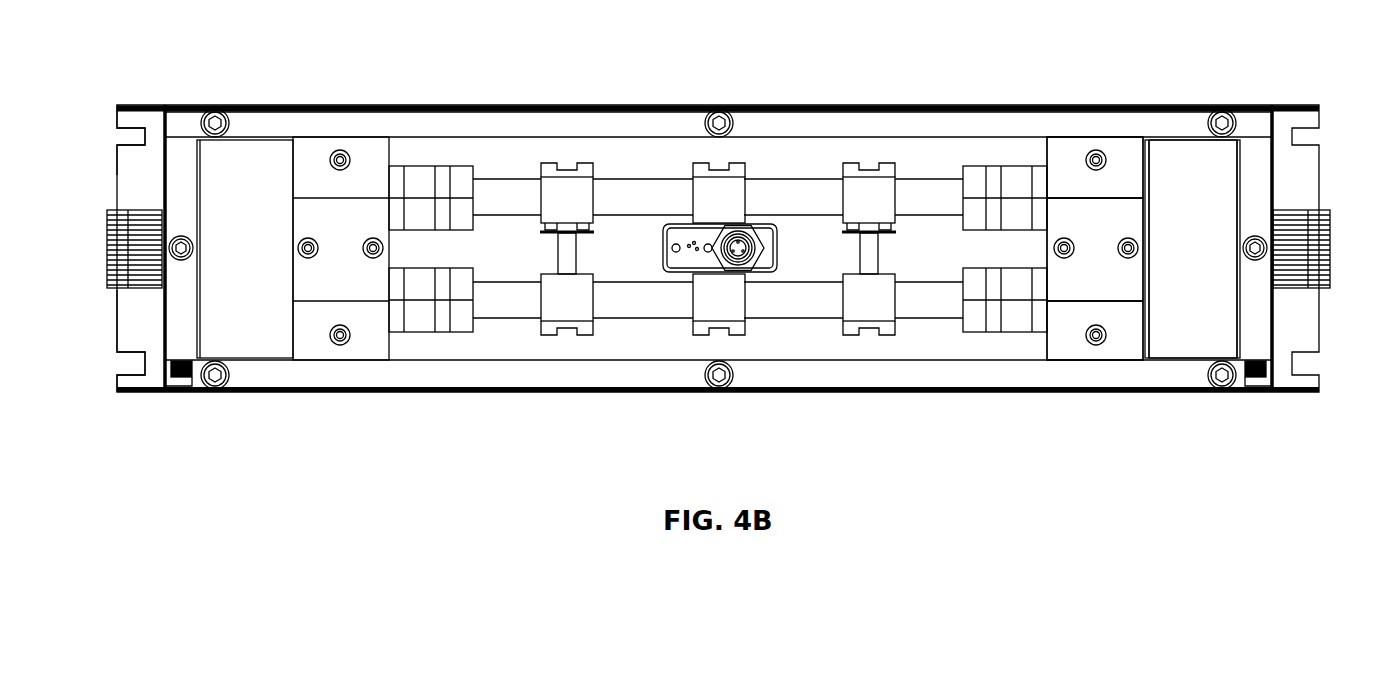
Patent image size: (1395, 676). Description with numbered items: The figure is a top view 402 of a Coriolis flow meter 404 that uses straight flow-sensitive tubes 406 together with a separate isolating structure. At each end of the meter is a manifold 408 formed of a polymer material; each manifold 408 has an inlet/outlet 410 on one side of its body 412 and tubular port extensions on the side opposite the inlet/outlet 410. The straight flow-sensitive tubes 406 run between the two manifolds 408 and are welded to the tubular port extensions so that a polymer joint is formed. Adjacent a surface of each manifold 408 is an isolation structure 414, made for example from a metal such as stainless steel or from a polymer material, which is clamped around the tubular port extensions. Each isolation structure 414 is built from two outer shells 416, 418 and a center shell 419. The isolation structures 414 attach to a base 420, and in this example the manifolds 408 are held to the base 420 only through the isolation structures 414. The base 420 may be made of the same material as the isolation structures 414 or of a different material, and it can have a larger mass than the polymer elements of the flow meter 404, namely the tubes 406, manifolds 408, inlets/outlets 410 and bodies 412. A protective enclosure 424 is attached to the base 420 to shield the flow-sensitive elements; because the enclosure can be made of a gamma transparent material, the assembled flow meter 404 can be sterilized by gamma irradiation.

The top view 402 is at (186, 435).
The Coriolis flow meter 404 is at (117, 307).
The flow-sensitive tubes 406 is at (620, 186).
The manifolds 408 is at (247, 158).
The inlet/outlet 410 is at (107, 255).
The body 412 is at (1170, 186).
The isolation structures 414 is at (1103, 210).
The outer shell 416 is at (1062, 160).
The outer shell 418 is at (1066, 335).
The center shell 419 is at (1063, 282).
The base 420 is at (117, 162).
The protective enclosure 424 is at (798, 118).